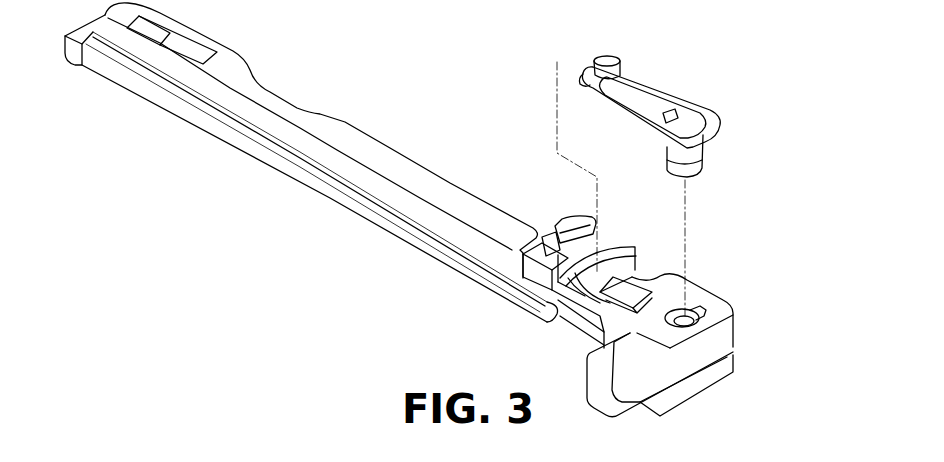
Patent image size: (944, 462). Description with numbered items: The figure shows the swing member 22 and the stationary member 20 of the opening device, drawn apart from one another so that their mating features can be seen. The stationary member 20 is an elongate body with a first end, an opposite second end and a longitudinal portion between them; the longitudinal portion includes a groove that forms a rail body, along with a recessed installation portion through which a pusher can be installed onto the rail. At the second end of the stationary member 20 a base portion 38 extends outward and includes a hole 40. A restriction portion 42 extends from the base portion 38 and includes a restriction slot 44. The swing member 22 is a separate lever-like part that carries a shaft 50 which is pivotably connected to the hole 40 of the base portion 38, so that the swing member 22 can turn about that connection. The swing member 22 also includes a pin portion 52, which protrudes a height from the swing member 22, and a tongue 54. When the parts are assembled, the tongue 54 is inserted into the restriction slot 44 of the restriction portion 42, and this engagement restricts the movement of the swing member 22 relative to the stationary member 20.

The stationary member 20 is at (423, 183).
The swing member 22 is at (653, 97).
The base portion 38 is at (693, 293).
The hole 40 is at (678, 317).
The restriction portion 42 is at (577, 247).
The restriction slot 44 is at (588, 295).
The shaft 50 is at (697, 163).
The pin portion 52 is at (615, 58).
The tongue 54 is at (585, 72).